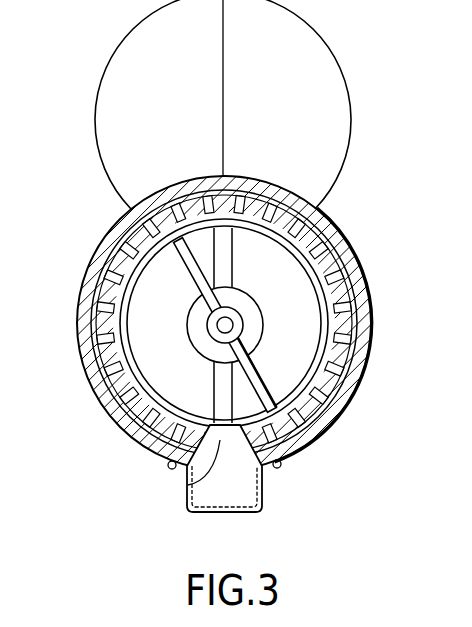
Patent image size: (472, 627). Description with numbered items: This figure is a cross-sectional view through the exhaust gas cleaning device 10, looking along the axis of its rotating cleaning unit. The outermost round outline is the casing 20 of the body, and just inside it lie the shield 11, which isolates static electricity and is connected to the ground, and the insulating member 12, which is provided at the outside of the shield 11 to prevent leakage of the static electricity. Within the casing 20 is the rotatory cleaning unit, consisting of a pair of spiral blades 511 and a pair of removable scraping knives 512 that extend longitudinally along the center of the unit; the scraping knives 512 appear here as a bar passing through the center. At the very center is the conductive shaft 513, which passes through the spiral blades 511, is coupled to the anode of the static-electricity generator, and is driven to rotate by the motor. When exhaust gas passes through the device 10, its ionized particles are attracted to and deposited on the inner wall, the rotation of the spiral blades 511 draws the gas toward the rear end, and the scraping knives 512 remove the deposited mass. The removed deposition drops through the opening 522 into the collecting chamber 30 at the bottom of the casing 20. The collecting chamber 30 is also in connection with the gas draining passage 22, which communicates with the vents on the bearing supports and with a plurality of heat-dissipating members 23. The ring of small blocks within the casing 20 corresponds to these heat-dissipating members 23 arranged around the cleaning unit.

The motor 10 is at (325, 257).
The shield 11 is at (128, 214).
The insulating member 12 is at (162, 195).
The casing 20 is at (307, 426).
The gas draining passage 22 is at (170, 410).
The heat-dissipating members 23 is at (197, 302).
The collecting chamber 30 is at (250, 483).
The spiral blades 511 is at (173, 383).
The scraping knife 512 is at (190, 256).
The conductive shaft 513 is at (221, 324).
The opening 522 is at (188, 478).